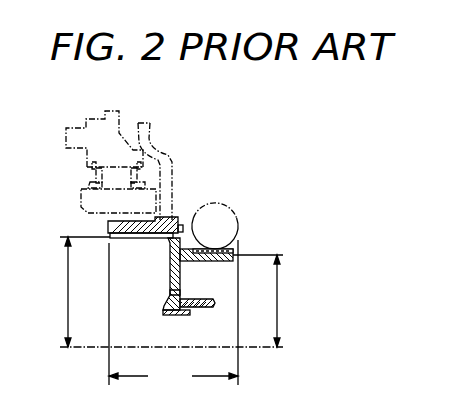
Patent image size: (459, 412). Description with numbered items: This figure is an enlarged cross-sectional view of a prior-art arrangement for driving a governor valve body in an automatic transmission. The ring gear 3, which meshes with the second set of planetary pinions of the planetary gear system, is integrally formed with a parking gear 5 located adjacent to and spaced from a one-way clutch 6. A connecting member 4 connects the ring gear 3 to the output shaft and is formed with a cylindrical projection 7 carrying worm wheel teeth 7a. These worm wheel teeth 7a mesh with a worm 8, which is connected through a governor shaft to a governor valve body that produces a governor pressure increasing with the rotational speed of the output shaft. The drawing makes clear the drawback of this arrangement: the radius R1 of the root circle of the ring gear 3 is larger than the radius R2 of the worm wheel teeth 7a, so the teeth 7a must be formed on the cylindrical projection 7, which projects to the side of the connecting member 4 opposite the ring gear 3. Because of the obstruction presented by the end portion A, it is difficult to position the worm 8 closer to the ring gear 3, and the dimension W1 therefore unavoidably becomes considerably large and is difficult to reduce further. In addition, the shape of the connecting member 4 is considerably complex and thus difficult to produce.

The ring gear 3 is at (137, 236).
The connecting member 4 is at (168, 276).
The parking gear 5 is at (150, 128).
The one-way clutch 6 is at (120, 126).
The cylindrical projection 7 is at (215, 261).
The worm wheel teeth 7a is at (231, 250).
The worm 8 is at (230, 210).
The end portion A is at (183, 221).
The radius of the root circle of the ring gear R1 is at (83, 292).
The radius of the worm wheel teeth R2 is at (260, 301).
The dimension W1 is at (173, 314).